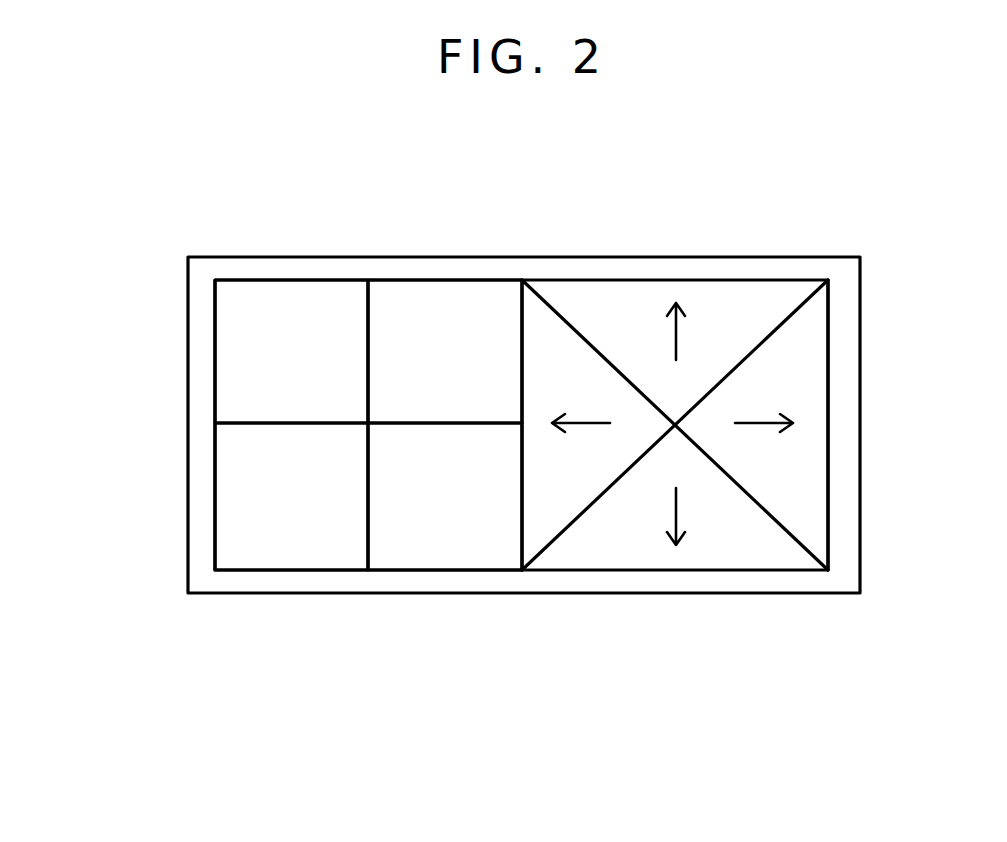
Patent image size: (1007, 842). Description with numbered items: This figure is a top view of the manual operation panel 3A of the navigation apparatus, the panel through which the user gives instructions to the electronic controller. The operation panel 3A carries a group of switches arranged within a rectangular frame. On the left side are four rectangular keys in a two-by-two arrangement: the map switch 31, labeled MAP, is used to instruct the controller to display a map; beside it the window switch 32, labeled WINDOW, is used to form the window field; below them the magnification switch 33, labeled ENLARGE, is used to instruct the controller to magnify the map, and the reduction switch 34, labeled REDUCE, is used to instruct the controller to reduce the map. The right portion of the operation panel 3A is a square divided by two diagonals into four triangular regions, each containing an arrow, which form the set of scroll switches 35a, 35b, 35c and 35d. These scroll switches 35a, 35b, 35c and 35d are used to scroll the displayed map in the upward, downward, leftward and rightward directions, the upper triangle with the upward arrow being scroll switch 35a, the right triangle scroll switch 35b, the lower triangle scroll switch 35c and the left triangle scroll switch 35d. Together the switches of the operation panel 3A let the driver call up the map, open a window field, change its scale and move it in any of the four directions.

The operation panel 3A is at (787, 257).
The map switch 31 is at (295, 285).
The window switch 32 is at (442, 285).
The magnification switch 33 is at (306, 571).
The reduction switch 34 is at (458, 571).
The scroll switch 35a is at (632, 298).
The scroll switch 35b is at (812, 447).
The scroll switch 35c is at (745, 545).
The scroll switch 35d is at (578, 488).